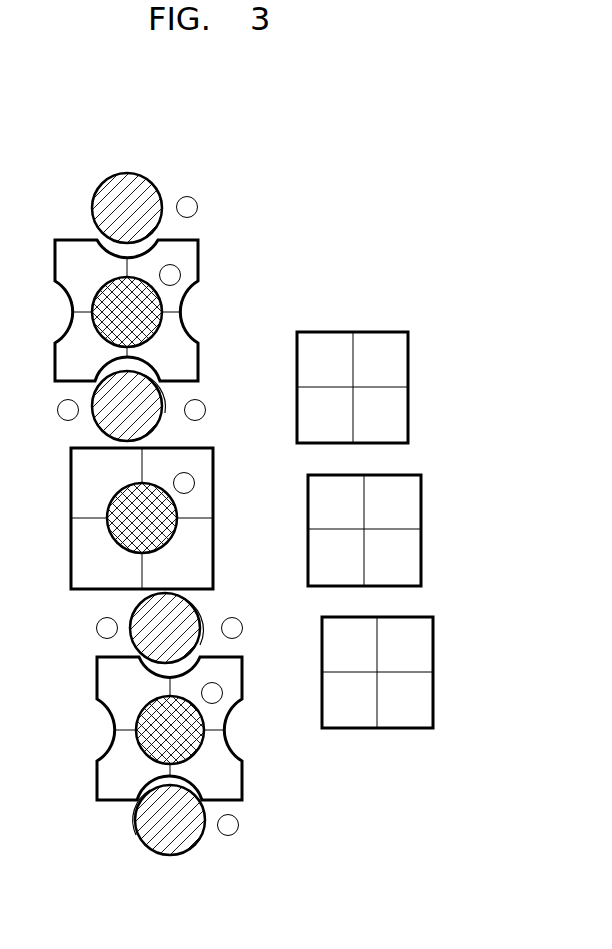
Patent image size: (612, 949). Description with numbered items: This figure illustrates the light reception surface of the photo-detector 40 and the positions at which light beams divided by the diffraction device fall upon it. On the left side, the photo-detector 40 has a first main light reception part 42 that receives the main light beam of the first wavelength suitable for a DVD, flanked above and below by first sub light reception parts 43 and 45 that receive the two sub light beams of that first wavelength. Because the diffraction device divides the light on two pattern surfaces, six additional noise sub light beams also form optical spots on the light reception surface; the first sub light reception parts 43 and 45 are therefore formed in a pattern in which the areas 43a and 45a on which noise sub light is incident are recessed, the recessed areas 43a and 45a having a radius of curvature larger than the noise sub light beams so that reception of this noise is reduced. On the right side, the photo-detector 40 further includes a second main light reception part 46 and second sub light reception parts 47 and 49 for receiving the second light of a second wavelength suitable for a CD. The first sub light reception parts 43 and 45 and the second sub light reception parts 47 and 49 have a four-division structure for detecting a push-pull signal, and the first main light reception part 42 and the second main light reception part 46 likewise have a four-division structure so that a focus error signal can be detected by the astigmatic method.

The photo-detector 40 is at (236, 208).
The first main light reception part 42 is at (213, 565).
The first sub light reception part 43 is at (198, 258).
The recessed area 43a is at (147, 248).
The first sub light reception part 45 is at (242, 782).
The recessed area 45a is at (147, 788).
The second main light reception part 46 is at (421, 490).
The second sub light reception part 47 is at (408, 345).
The second sub light reception part 49 is at (433, 635).